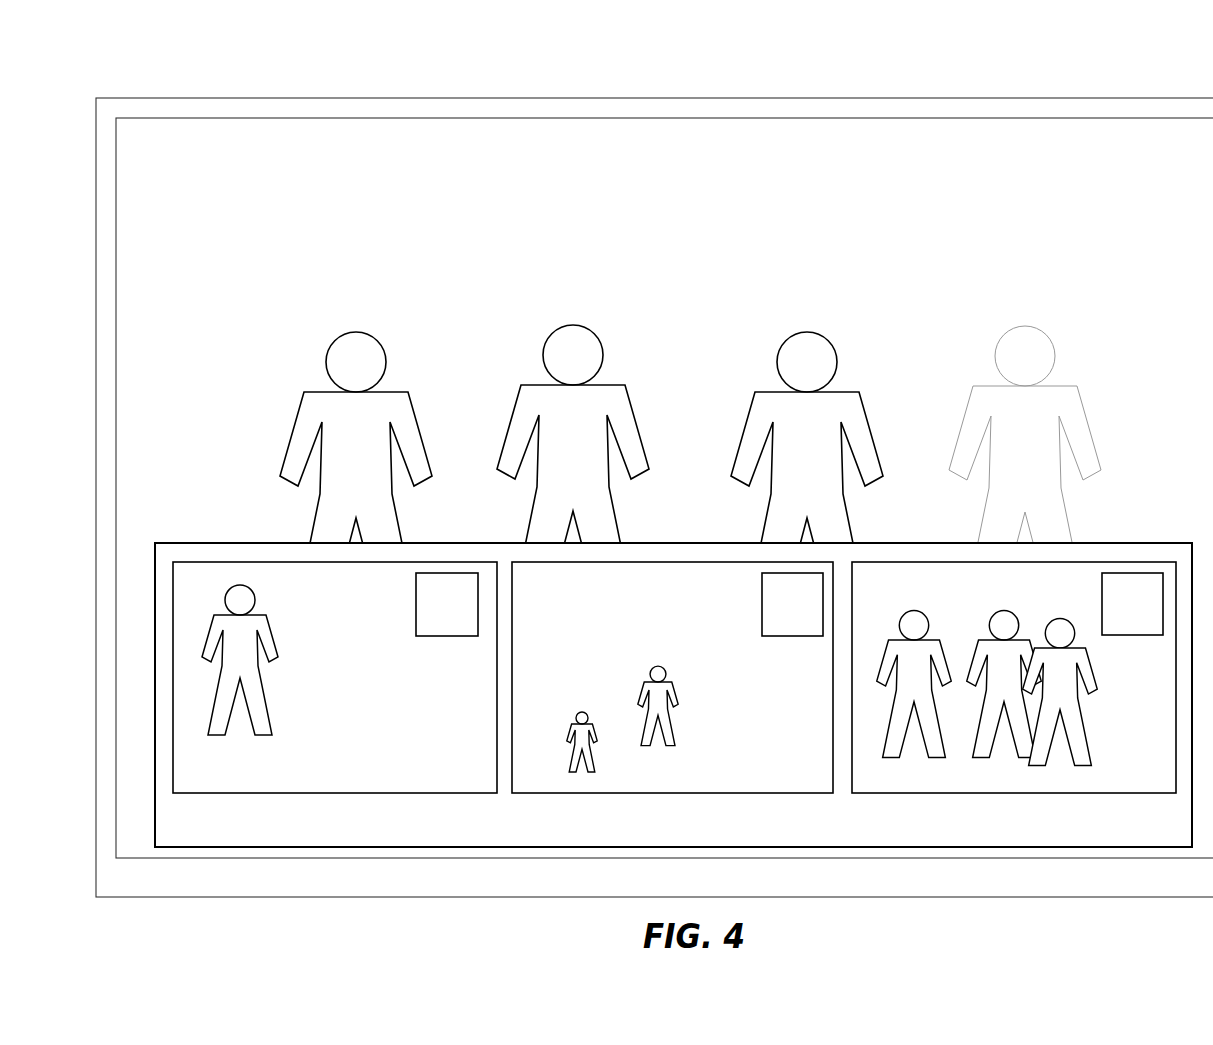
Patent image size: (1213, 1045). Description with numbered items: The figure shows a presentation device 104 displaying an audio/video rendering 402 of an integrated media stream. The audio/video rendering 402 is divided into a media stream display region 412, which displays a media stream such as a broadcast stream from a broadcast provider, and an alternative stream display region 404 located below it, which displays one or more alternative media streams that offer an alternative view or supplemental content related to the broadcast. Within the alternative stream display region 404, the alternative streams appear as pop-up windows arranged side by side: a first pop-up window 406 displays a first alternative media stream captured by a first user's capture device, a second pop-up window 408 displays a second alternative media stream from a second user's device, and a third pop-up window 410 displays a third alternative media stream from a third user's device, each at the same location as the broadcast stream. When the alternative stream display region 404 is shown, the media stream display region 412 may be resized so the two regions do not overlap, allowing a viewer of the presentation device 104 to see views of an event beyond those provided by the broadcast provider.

The presentation device 104 is at (1008, 98).
The audio/video rendering 402 is at (697, 170).
The alternative stream display region 404 is at (673, 671).
The first pop-up window 406 is at (256, 561).
The second pop-up window 408 is at (674, 562).
The third pop-up window 410 is at (1014, 644).
The media stream display region 412 is at (333, 139).